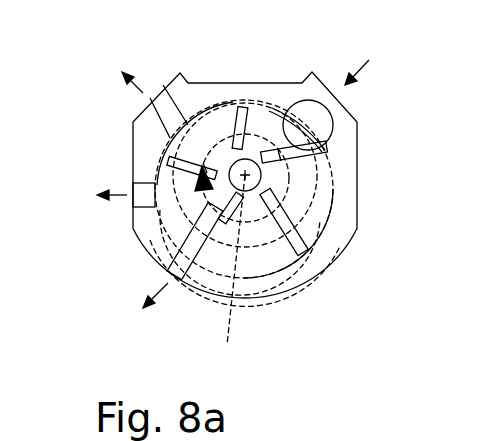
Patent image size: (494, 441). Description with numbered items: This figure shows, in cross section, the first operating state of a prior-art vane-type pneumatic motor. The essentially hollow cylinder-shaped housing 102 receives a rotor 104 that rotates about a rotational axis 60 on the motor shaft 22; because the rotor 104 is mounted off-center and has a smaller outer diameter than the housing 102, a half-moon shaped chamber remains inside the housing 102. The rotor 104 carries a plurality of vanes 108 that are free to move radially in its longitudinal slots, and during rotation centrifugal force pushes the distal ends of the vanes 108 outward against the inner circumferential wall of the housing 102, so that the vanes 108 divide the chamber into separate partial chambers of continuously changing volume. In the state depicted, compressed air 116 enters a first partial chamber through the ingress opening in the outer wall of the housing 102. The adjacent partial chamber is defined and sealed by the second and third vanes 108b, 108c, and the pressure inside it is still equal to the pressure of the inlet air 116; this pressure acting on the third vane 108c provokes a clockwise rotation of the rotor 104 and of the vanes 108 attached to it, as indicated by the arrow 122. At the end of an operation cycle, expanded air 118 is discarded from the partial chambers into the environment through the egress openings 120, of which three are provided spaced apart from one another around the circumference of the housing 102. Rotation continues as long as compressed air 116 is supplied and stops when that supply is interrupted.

The motor shaft 22 is at (230, 165).
The rotational axis 60 is at (227, 273).
The housing 102 is at (340, 245).
The rotor 104 is at (267, 233).
The vane 108 is at (265, 104).
The second vane 108b is at (300, 163).
The third vane 108c is at (298, 247).
The compressed air 116 is at (370, 62).
The air 118 is at (138, 96).
The egress opening 120 is at (167, 112).
The arrow 122 is at (190, 226).